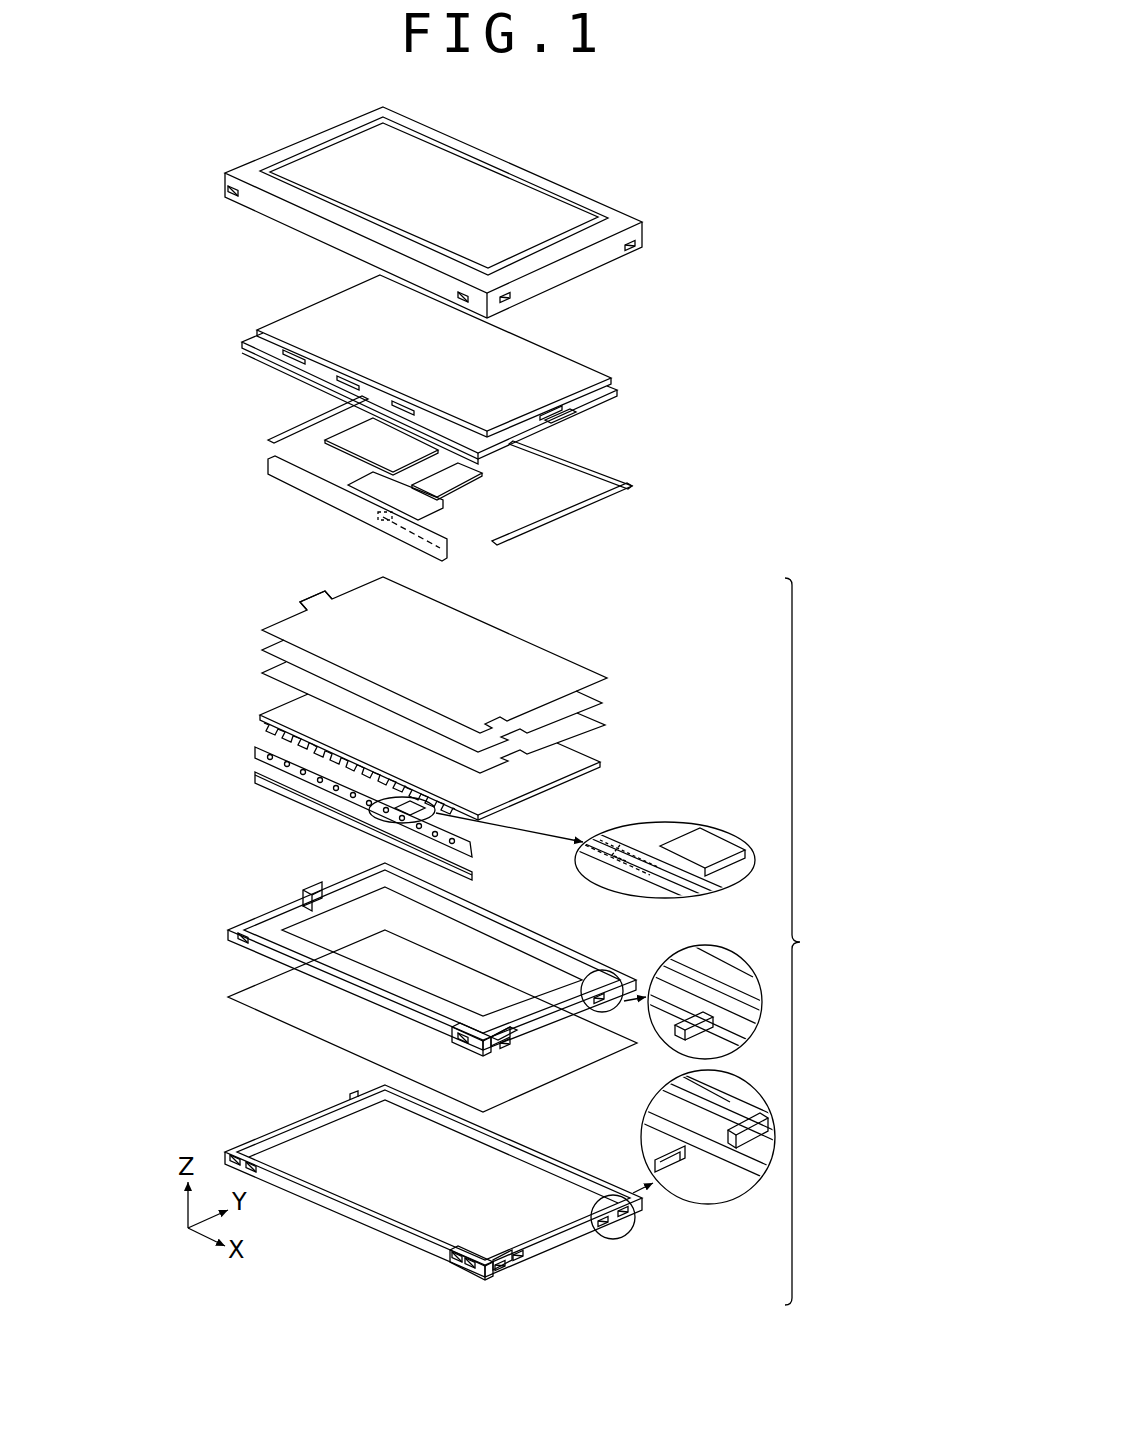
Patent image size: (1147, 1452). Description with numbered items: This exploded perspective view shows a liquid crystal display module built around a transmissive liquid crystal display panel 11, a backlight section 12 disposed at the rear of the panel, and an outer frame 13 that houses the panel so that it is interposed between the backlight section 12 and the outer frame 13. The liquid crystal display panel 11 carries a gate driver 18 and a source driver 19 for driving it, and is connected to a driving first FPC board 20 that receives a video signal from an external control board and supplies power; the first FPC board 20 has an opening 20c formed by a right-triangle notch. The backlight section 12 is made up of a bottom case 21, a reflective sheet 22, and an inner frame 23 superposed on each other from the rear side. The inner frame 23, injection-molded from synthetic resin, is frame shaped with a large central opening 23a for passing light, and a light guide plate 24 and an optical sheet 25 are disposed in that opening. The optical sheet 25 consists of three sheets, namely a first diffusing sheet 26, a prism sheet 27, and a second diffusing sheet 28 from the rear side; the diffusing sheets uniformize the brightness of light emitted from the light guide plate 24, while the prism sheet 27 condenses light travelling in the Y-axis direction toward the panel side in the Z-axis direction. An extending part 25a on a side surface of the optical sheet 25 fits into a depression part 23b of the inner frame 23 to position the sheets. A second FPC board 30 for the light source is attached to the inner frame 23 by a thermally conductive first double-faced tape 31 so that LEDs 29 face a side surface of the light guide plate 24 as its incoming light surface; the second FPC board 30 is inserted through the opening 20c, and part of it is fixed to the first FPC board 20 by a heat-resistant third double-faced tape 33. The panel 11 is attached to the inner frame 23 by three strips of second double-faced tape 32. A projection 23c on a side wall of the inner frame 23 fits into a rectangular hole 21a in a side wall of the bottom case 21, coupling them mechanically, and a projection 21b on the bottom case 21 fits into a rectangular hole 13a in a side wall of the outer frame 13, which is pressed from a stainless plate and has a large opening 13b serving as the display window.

The liquid crystal display panel 11 is at (568, 372).
The backlight section 12 is at (813, 941).
The outer frame 13 is at (575, 265).
The rectangular hole 13a is at (512, 300).
The opening 13b is at (530, 208).
The gate driver 18 is at (567, 420).
The source driver 19 is at (330, 393).
The first FPC board 20 is at (280, 477).
The opening 20c is at (393, 523).
The bottom case 21 is at (507, 1178).
The rectangular hole 21a is at (667, 1160).
The projection 21b is at (748, 1140).
The reflective sheet 22 is at (520, 1083).
The inner frame 23 is at (510, 938).
The central opening 23a is at (360, 920).
The depression part 23b is at (305, 897).
The projection 23c is at (682, 1027).
The light guide plate 24 is at (517, 785).
The optical sheet 25 is at (459, 675).
The extending part 25a is at (300, 602).
The first diffusing sheet 26 is at (465, 717).
The prism sheet 27 is at (565, 697).
The second diffusing sheet 28 is at (548, 663).
The LEDs 29 is at (623, 857).
The second FPC board 30 is at (252, 750).
The first double-faced tape 31 is at (252, 778).
The second double-faced tape 32 is at (270, 441).
The third double-faced tape 33 is at (365, 443).